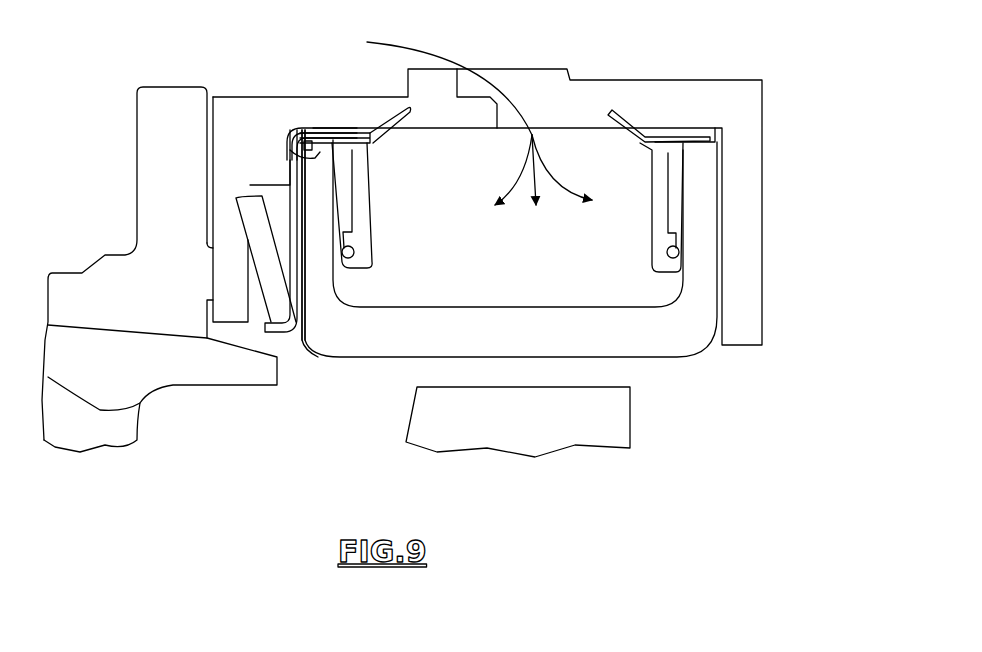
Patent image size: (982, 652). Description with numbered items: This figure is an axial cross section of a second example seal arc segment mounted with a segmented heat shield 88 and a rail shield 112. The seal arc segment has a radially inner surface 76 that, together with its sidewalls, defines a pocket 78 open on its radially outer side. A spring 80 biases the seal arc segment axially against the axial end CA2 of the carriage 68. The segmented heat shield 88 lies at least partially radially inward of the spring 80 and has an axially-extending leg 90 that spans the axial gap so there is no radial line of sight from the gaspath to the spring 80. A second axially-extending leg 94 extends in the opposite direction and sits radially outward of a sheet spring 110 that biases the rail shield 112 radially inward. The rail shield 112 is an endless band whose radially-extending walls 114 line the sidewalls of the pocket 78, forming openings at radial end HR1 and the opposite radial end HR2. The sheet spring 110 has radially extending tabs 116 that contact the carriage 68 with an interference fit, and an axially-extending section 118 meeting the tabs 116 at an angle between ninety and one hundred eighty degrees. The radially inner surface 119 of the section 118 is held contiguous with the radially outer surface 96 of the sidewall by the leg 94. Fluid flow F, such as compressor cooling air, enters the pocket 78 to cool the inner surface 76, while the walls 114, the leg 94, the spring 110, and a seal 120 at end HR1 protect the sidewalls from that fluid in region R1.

The carriage 68 is at (258, 120).
The radially inner surface 76 is at (580, 300).
The pocket 78 is at (526, 233).
The spring 80 is at (270, 266).
The segmented heat shield 88 is at (303, 262).
The axially-extending leg 90 is at (280, 330).
The second axially-extending leg 94 is at (370, 145).
The radially outer surface 96 is at (290, 180).
The sheet spring 110 is at (400, 137).
The rail shield 112 is at (367, 226).
The radially-extending walls 114 is at (363, 210).
The radially extending tabs 116 is at (410, 116).
The axially-extending section 118 is at (338, 132).
The radially inner surface 119 is at (300, 150).
The seal 120 is at (350, 258).
The fluid flow F is at (443, 56).
The radial end HR1 is at (642, 250).
The opposite radial end HR2 is at (647, 145).
The axial end of the carriage CA2 is at (764, 78).
The first region R1 is at (690, 363).